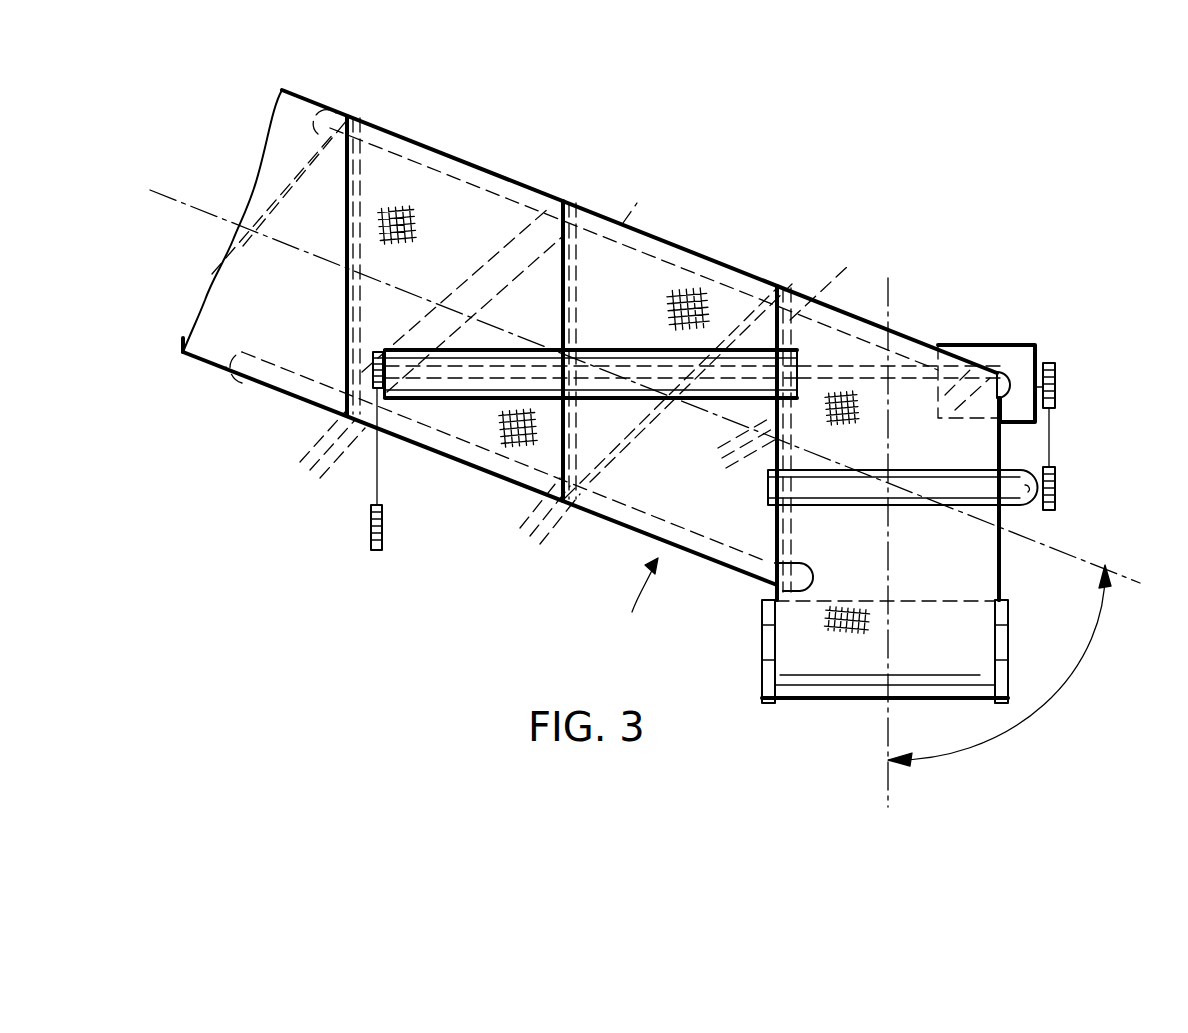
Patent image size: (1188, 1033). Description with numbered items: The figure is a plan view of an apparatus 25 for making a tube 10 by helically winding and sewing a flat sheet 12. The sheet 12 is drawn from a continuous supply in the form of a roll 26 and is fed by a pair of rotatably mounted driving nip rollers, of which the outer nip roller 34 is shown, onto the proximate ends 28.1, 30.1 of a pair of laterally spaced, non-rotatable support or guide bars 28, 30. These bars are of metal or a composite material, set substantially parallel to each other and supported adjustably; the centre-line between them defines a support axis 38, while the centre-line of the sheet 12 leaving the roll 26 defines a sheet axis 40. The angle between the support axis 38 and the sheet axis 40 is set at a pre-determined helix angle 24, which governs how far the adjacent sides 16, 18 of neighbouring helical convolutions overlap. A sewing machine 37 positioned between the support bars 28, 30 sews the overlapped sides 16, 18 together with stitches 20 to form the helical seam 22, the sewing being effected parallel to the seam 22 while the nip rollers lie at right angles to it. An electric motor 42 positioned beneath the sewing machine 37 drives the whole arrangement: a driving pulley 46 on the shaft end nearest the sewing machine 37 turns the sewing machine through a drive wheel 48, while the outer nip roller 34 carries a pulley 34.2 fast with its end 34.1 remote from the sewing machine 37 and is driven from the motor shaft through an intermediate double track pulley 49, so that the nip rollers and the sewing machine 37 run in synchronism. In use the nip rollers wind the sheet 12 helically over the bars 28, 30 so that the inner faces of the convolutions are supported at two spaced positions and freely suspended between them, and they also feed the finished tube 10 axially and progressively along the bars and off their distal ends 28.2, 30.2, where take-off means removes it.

The tube 10 is at (554, 150).
The sheet 12 is at (940, 556).
The side of helical convolution 16 is at (561, 290).
The side of helical convolution 18 is at (1027, 590).
The stitches 20 is at (521, 484).
The helical seam 22 is at (348, 117).
The helix angle 24 is at (1090, 640).
The apparatus 25 is at (632, 612).
The roll 26 is at (967, 657).
The support bar 28 is at (700, 240).
The proximate end of support bar 28.1 is at (938, 345).
The distal end of support bar 28.2 is at (380, 136).
The support bar 30 is at (444, 438).
The proximate end of support bar 30.1 is at (712, 577).
The distal end of support bar 30.2 is at (242, 365).
The outer nip roller 34 is at (632, 349).
The end of outer nip roller 34.1 is at (390, 349).
The pulley 34.2 is at (372, 365).
The sewing machine 37 is at (942, 488).
The support axis 38 is at (207, 206).
The sheet axis 40 is at (891, 282).
The electric motor 42 is at (1013, 347).
The driving pulley 46 is at (1056, 388).
The drive wheel 48 is at (1056, 490).
The intermediate double track pulley 49 is at (374, 528).